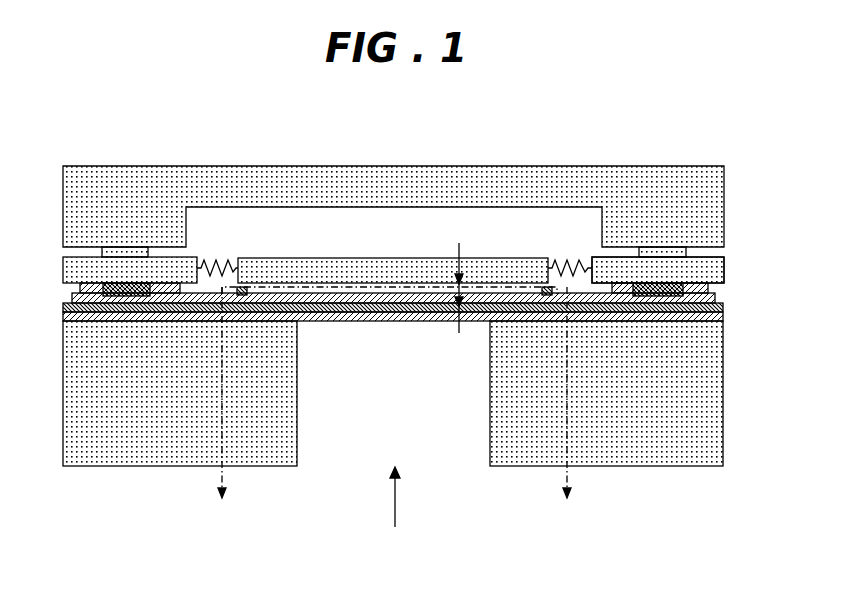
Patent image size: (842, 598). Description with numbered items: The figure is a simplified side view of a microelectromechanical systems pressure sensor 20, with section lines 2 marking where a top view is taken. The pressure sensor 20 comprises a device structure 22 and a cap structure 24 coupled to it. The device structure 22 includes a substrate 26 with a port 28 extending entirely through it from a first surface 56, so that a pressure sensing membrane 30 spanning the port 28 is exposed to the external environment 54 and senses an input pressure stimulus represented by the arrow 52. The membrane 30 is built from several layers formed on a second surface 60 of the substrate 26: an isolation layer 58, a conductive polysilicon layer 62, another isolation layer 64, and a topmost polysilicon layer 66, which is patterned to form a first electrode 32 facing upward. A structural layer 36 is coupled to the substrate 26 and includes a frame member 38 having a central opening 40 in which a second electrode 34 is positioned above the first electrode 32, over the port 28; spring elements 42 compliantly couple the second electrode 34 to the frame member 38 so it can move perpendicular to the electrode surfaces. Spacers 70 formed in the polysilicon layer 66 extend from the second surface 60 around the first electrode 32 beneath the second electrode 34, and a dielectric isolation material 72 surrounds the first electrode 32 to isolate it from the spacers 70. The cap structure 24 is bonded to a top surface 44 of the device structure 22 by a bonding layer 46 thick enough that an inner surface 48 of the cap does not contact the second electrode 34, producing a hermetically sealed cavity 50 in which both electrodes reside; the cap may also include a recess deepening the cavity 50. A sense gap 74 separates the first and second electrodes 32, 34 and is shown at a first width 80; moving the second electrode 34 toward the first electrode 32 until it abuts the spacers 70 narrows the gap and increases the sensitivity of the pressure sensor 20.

The pressure sensor 20 is at (659, 558).
The device structure 22 is at (57, 257).
The cap structure 24 is at (57, 246).
The substrate 26 is at (95, 458).
The port 28 is at (380, 388).
The membrane 30 is at (343, 322).
The first electrode 32 is at (310, 296).
The second electrode 34 is at (394, 270).
The structural layer 36 is at (731, 262).
The frame member 38 is at (80, 267).
The central opening 40 is at (209, 245).
The spring elements 42 is at (228, 268).
The top surface 44 is at (88, 257).
The bonding layer 46 is at (692, 252).
The inner surface 48 is at (613, 250).
The cavity 50 is at (352, 241).
The arrow 52 is at (396, 512).
The environment 54 is at (329, 575).
The first surface 56 is at (107, 469).
The isolation layer 58 is at (724, 322).
The second surface 60 is at (169, 326).
The polysilicon layer 62 is at (724, 315).
The isolation layer 64 is at (724, 307).
The polysilicon layer 66 is at (724, 298).
The spacers 70 is at (240, 296).
The dielectric isolation material 72 is at (258, 292).
The sense gap 74 is at (283, 288).
The first width 80 is at (460, 250).
The section lines 2 is at (394, 411).